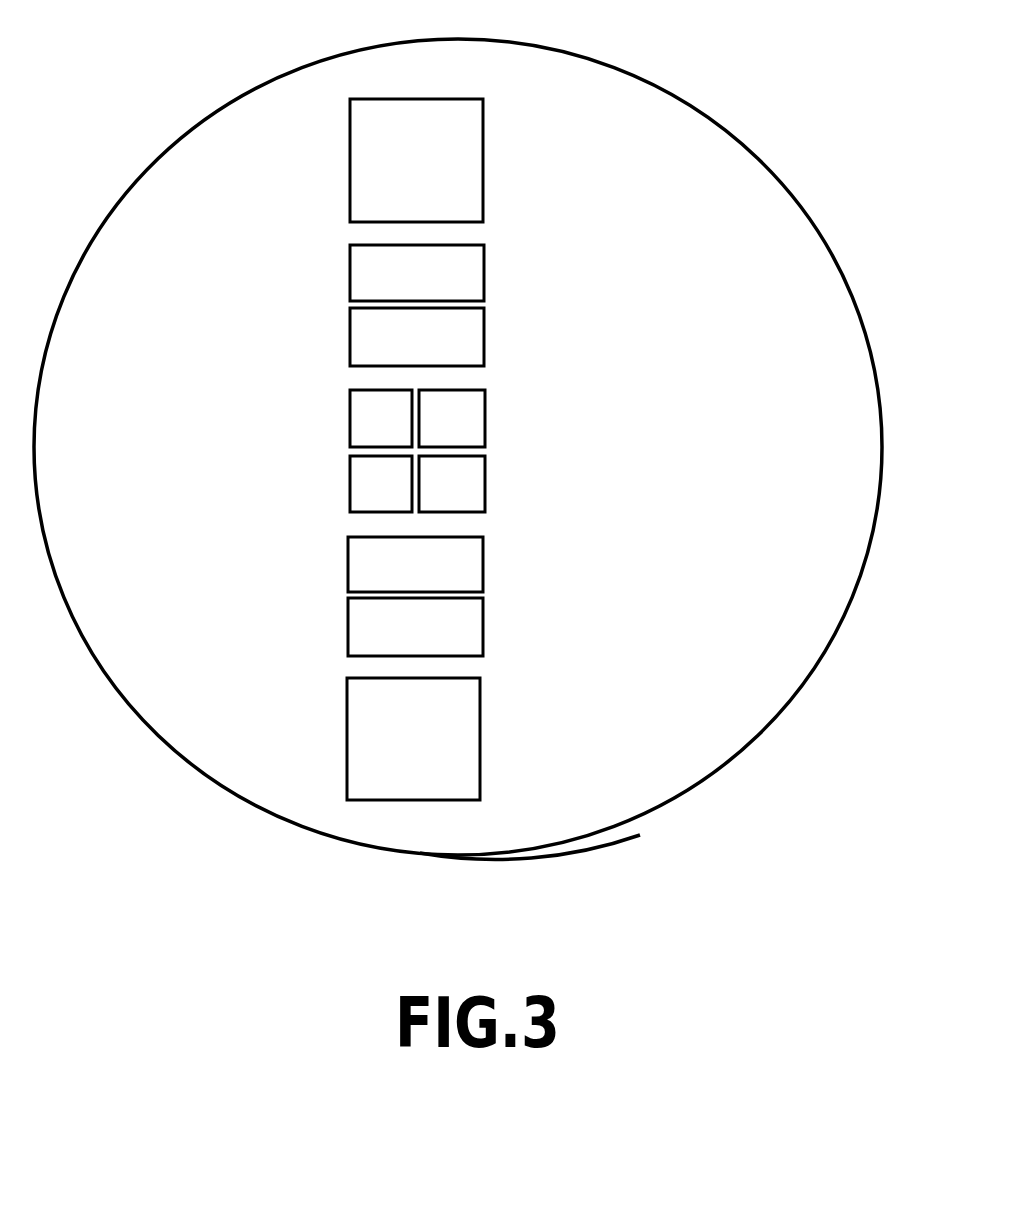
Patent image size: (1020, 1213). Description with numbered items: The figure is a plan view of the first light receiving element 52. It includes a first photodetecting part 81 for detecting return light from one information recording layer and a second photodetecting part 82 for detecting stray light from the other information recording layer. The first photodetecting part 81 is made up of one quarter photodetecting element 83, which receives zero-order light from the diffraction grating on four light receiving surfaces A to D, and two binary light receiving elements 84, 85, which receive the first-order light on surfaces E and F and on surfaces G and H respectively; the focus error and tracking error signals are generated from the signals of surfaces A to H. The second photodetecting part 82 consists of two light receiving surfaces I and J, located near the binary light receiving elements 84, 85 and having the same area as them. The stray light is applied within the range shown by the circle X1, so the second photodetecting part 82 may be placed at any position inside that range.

The first light receiving element 52 is at (596, 178).
The first photodetecting part 81 is at (493, 450).
The second photodetecting part 82 is at (357, 196).
The quarter photodetecting element 83 is at (500, 390).
The binary light receiving element 84 is at (500, 243).
The binary light receiving element 85 is at (448, 596).
The circle X1 is at (625, 825).